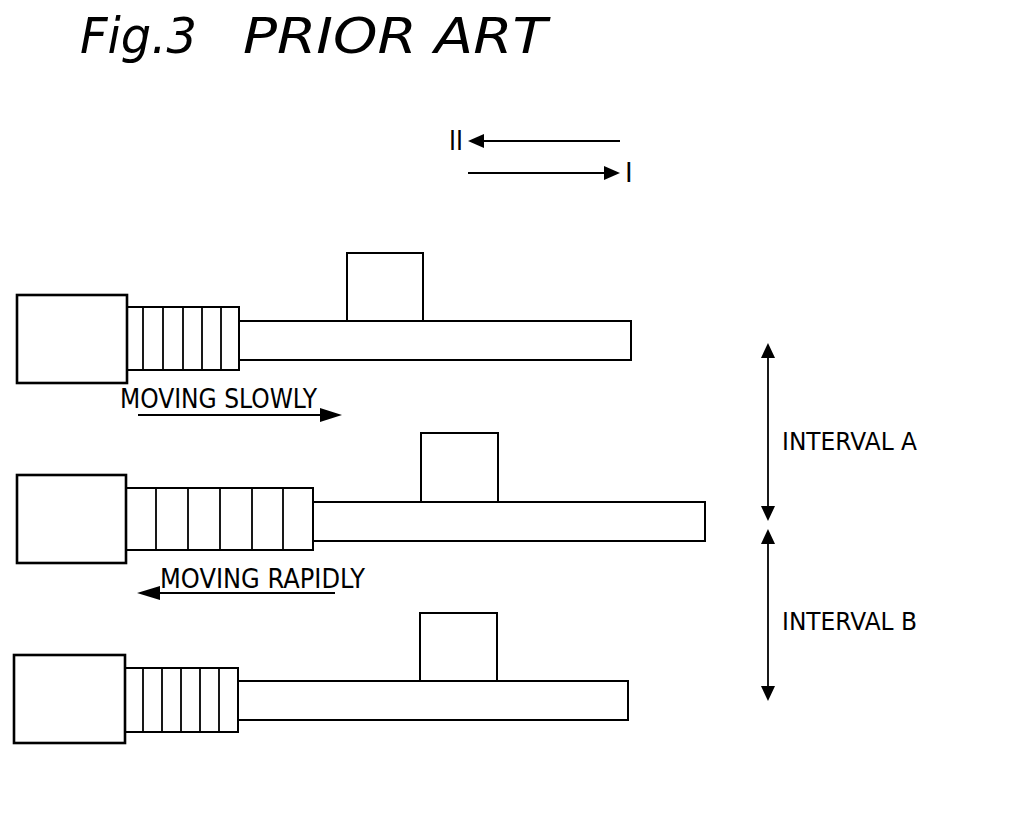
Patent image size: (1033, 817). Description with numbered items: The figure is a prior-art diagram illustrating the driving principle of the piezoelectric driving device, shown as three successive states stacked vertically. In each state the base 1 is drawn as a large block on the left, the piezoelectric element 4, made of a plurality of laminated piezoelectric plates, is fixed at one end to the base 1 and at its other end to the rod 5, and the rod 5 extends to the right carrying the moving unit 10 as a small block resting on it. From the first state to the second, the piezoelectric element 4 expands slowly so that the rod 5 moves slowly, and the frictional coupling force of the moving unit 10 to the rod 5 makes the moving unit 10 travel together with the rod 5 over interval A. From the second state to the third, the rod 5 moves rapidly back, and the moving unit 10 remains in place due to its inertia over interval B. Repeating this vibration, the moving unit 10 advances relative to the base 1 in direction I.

The base 1 is at (97, 295).
The piezoelectric element 4 is at (172, 307).
The rod 5 is at (588, 321).
The moving unit 10 is at (395, 258).